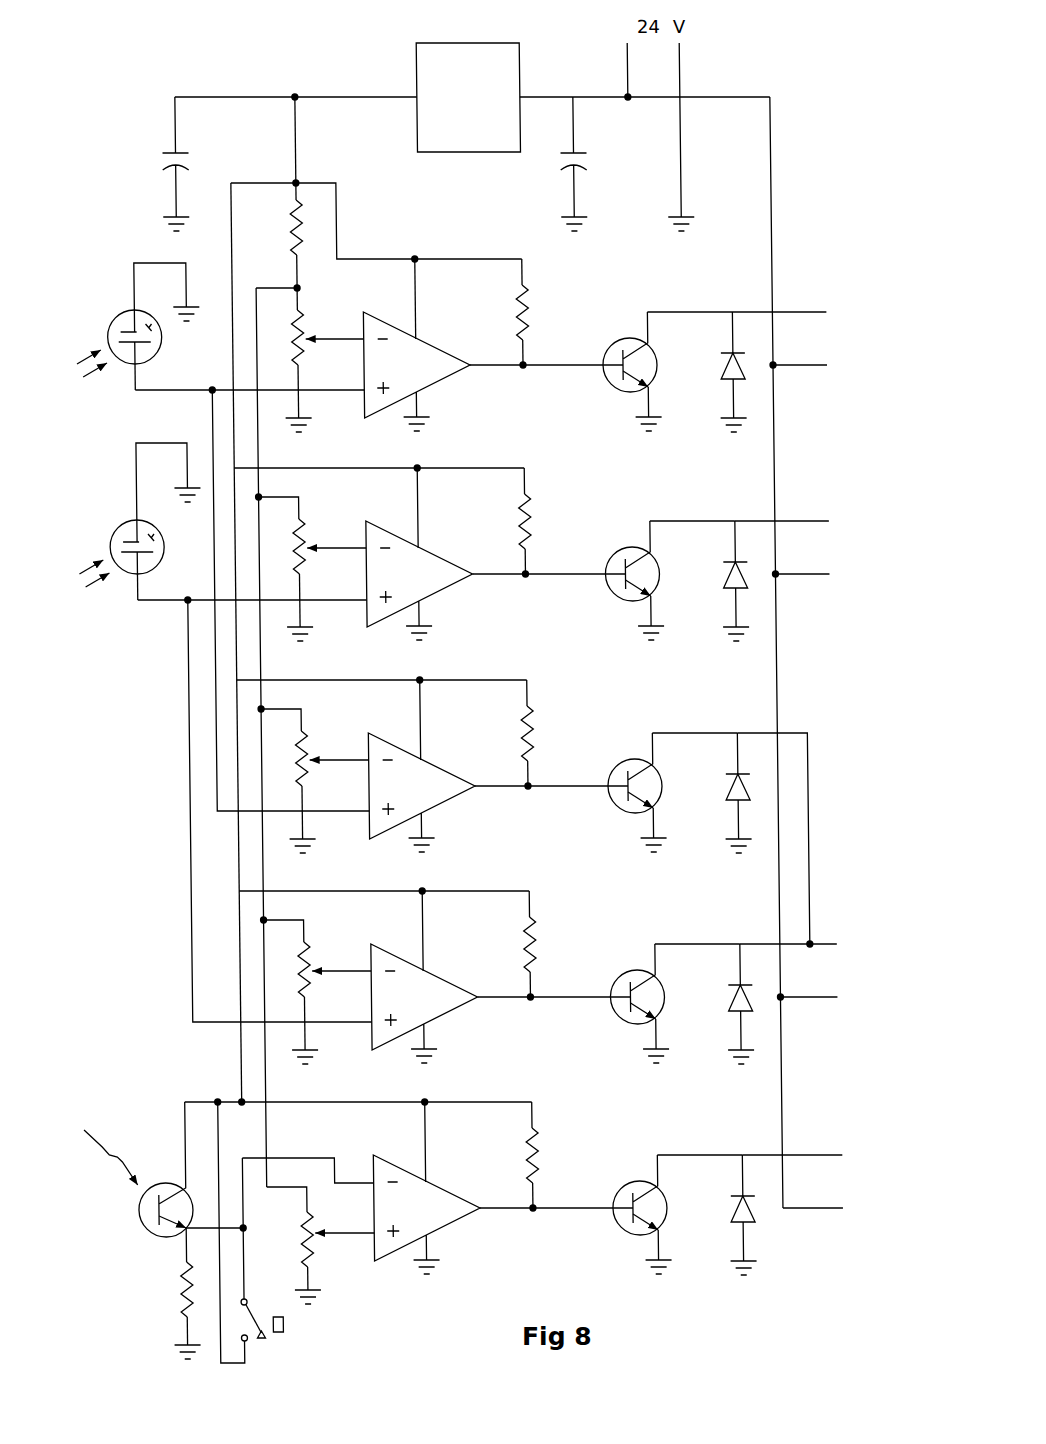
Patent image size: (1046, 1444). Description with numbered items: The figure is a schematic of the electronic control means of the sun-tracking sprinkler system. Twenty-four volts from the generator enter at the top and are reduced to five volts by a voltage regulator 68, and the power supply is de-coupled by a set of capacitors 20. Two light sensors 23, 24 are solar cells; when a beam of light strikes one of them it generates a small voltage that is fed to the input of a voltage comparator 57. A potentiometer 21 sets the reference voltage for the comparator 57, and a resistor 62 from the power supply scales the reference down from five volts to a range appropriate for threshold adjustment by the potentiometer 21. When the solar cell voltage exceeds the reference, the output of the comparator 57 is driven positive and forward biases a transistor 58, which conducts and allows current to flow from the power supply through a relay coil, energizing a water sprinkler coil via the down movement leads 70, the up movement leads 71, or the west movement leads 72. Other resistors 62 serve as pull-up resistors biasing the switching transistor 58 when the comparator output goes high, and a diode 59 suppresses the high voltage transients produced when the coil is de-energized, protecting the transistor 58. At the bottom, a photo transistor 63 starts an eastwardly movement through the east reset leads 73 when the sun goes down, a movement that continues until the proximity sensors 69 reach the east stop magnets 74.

The capacitors 20 is at (164, 167).
The potentiometer 21 is at (302, 330).
The light sensor 23 is at (122, 322).
The light sensor 24 is at (124, 529).
The voltage comparator 57 is at (423, 375).
The transistor 58 is at (617, 376).
The diode 59 is at (723, 377).
The resistor 62 is at (527, 308).
The photo transistor 63 is at (140, 1217).
The voltage regulator 68 is at (436, 73).
The proximity sensor 69 is at (246, 1342).
The down movement leads 70 is at (816, 351).
The up movement leads 71 is at (818, 557).
The west movement leads 72 is at (822, 983).
The east reset leads 73 is at (823, 1192).
The east stop magnet 74 is at (274, 1320).